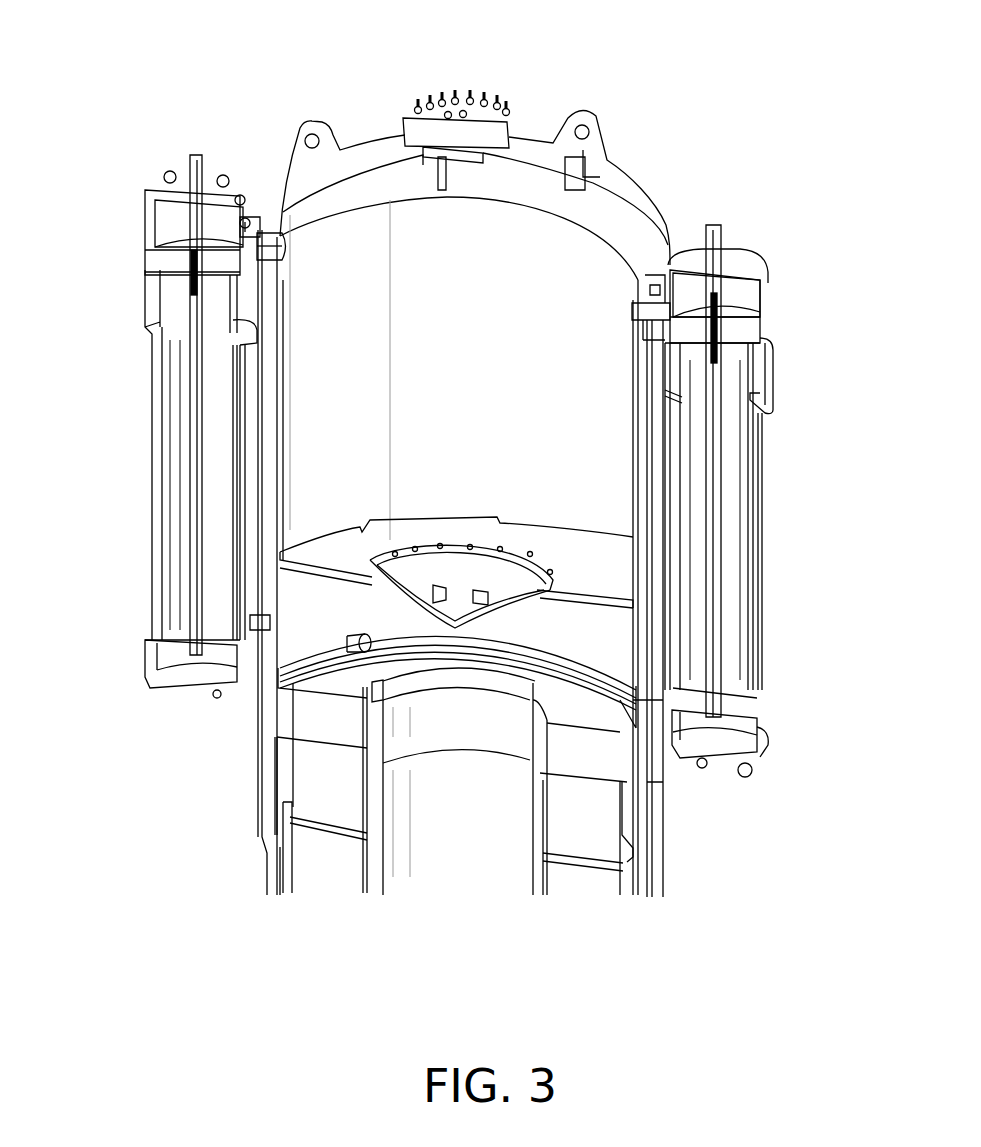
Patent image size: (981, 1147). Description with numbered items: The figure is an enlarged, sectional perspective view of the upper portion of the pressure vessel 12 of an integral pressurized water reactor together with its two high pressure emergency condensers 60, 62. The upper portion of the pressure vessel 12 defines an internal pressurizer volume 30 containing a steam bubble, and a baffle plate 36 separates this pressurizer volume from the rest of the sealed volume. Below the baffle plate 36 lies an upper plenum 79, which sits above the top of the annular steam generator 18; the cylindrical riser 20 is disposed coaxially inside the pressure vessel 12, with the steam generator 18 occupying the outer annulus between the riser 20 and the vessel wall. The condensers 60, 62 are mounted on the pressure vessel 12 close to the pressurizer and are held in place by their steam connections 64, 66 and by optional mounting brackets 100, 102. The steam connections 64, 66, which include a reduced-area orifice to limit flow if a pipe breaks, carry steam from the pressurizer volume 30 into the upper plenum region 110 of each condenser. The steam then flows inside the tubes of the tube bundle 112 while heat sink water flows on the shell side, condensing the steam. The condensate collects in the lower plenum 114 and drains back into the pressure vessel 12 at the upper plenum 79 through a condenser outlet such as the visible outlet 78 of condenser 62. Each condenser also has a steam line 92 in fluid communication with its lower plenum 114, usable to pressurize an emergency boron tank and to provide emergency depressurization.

The pressure vessel 12 is at (667, 868).
The steam generator 18 is at (317, 853).
The riser 20 is at (470, 786).
The internal pressurizer volume 30 is at (443, 389).
The baffle plate 36 is at (556, 545).
The condenser 60 is at (785, 522).
The condenser 62 is at (143, 428).
The steam connection 64 is at (650, 290).
The steam connection 66 is at (262, 233).
The condenser outlet 78 is at (360, 655).
The upper plenum 79 is at (375, 610).
The steam line 92 is at (193, 153).
The mounting bracket 100 is at (775, 372).
The mounting bracket 102 is at (153, 302).
The upper plenum region 110 is at (167, 230).
The tube bundle 112 is at (176, 358).
The lower plenum 114 is at (148, 660).